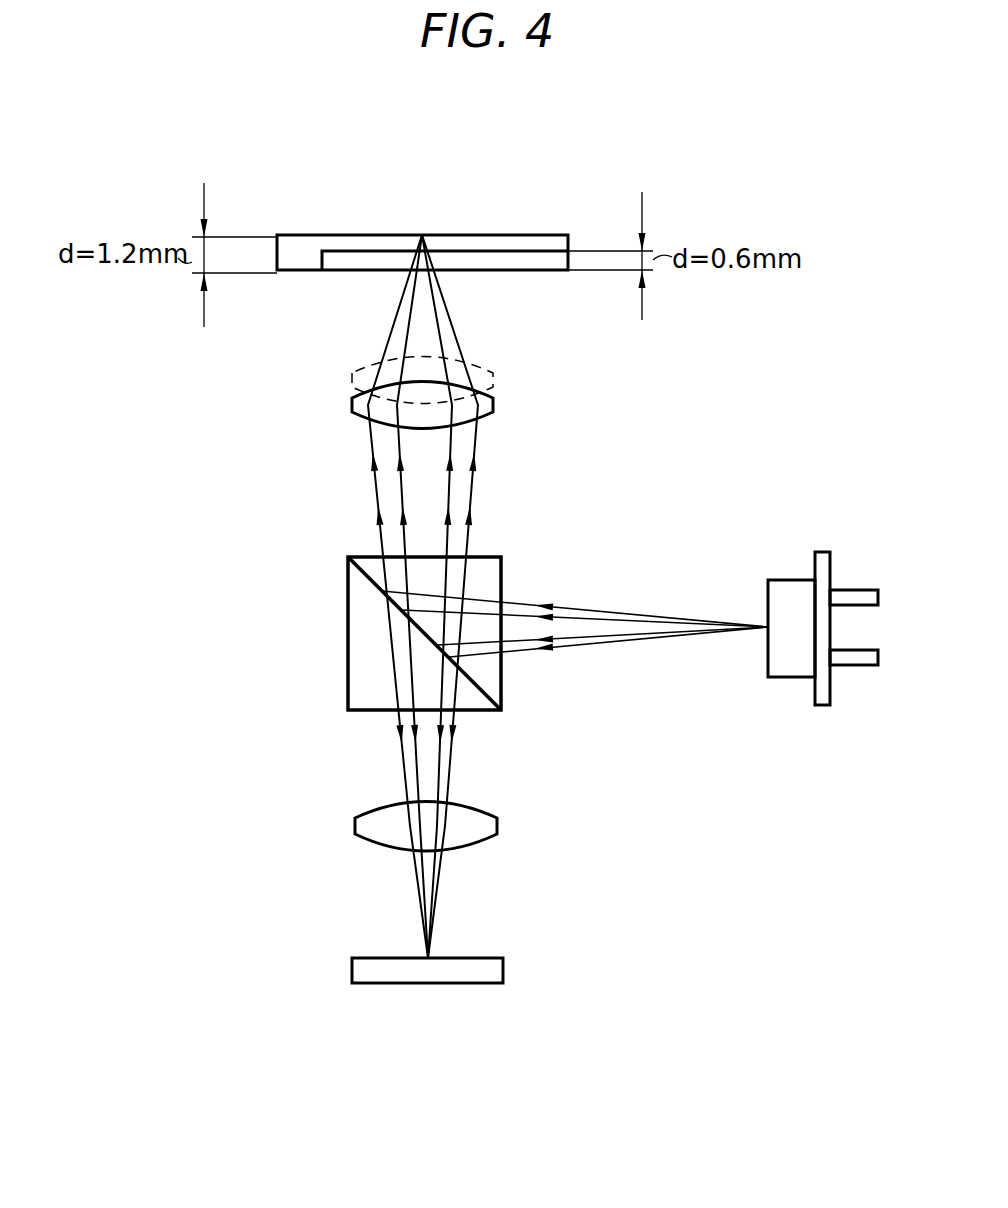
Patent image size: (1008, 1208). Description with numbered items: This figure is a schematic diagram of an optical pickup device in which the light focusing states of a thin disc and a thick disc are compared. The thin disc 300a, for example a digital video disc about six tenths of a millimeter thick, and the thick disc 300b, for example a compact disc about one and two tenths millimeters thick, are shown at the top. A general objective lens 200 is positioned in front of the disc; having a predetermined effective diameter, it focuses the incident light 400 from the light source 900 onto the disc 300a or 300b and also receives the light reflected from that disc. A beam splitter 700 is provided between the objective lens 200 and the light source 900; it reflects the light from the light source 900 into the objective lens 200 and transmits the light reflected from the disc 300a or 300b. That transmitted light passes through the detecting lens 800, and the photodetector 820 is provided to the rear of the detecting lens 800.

The thick disc 300b is at (298, 248).
The thin disc 300a is at (533, 258).
The objective lens 200 is at (493, 410).
The incident light 400 is at (476, 470).
The beam splitter 700 is at (348, 672).
The detecting lens 800 is at (497, 826).
The photodetector 820 is at (503, 970).
The light source 900 is at (795, 590).